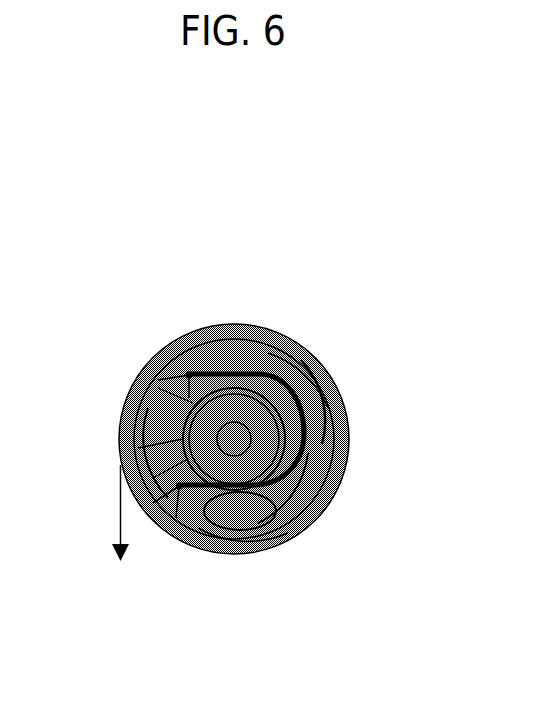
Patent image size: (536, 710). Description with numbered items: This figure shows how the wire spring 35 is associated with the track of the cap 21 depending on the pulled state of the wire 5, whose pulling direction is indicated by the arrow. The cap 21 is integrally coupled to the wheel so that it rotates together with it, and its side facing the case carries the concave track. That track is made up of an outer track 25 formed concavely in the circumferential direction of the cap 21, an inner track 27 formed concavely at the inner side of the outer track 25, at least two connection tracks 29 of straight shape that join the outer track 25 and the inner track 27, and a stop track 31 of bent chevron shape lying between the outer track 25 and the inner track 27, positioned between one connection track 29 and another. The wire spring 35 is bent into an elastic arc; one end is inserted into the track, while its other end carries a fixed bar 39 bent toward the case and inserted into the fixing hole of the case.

The cap 21 is at (234, 383).
The outer track 25 is at (315, 387).
The inner track 27 is at (169, 459).
The connection track 29 is at (243, 558).
The stop track 31 is at (168, 323).
The wire spring 35 is at (299, 429).
The fixed bar 39 is at (156, 554).
The wire 5 is at (83, 519).